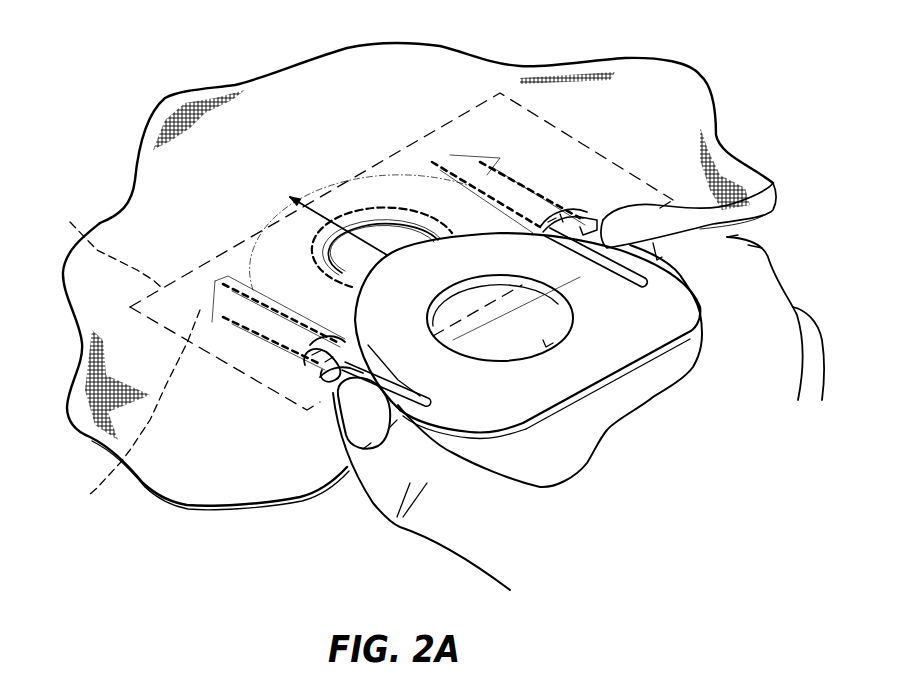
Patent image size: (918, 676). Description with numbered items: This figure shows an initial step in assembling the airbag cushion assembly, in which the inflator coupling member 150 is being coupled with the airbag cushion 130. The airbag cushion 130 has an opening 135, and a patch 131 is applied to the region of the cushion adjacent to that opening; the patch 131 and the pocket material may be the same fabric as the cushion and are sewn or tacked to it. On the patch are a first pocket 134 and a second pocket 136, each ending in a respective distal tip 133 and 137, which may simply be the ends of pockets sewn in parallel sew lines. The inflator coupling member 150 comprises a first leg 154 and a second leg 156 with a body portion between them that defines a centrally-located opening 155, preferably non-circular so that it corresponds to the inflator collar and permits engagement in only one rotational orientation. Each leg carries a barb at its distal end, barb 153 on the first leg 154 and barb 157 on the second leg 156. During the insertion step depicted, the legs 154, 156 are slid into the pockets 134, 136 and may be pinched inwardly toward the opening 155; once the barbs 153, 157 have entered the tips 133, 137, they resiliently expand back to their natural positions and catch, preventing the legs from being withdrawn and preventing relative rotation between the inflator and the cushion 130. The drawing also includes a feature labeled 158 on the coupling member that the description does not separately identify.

The airbag cushion 130 is at (677, 107).
The patch 131 is at (97, 244).
The distal tip 133 is at (123, 406).
The first pocket 134 is at (290, 357).
The opening 135 is at (394, 240).
The second pocket 136 is at (547, 205).
The distal tip 137 is at (470, 160).
The inflator coupling member 150 is at (657, 307).
The barb 153 is at (337, 340).
The first leg 154 is at (320, 397).
The opening 155 is at (547, 323).
The second leg 156 is at (645, 262).
The barb 157 is at (565, 232).
The plate notch 158 is at (547, 340).